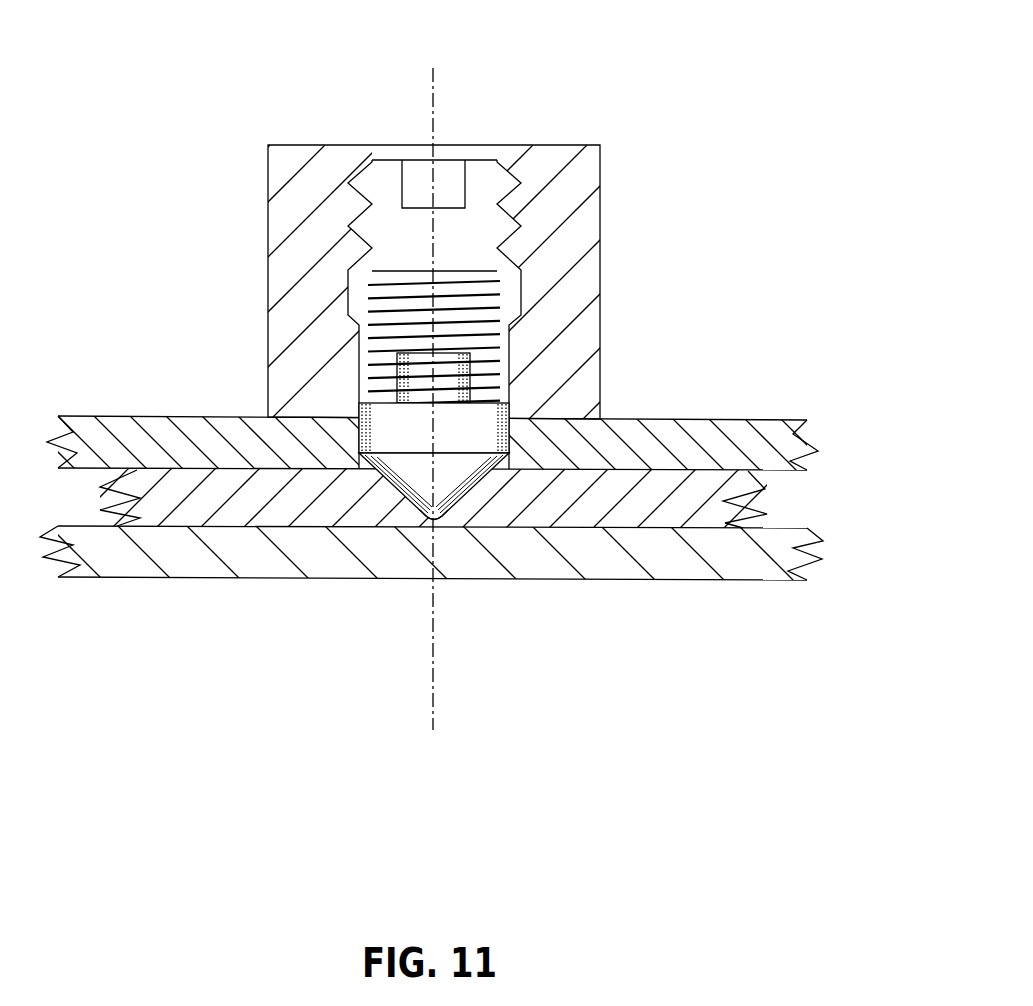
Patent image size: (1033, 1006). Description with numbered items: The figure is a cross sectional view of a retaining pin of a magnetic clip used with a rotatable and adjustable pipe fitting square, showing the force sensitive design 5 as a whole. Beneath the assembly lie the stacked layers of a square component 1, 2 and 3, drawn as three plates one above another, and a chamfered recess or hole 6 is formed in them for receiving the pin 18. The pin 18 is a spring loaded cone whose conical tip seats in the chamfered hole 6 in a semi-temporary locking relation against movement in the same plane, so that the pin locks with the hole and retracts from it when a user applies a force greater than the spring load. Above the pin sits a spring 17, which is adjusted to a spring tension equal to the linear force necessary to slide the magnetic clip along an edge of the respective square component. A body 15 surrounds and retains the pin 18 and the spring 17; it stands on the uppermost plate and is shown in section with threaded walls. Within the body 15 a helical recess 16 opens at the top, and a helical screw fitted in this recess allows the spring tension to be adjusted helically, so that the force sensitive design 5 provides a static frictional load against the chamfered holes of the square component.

The layer of square component 1 is at (806, 576).
The layer of square component 2 is at (723, 499).
The layer of square component 3 is at (808, 440).
The force sensitive design 5 is at (428, 329).
The chamfered recess or hole 6 is at (423, 522).
The body 15 is at (293, 218).
The helical recess 16 is at (383, 180).
The spring 17 is at (372, 293).
The pin 18 is at (410, 467).